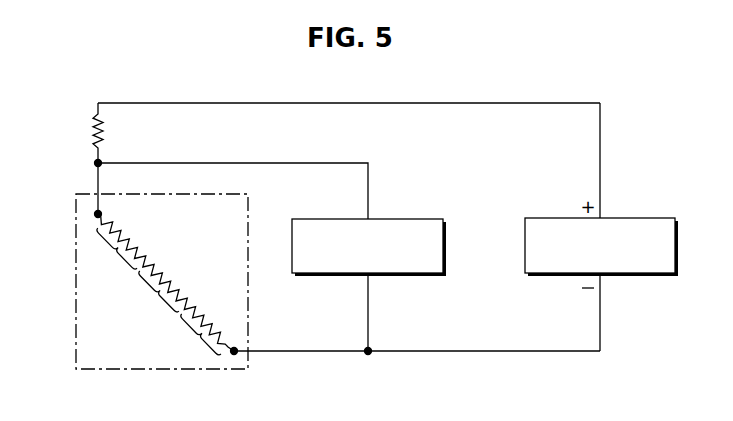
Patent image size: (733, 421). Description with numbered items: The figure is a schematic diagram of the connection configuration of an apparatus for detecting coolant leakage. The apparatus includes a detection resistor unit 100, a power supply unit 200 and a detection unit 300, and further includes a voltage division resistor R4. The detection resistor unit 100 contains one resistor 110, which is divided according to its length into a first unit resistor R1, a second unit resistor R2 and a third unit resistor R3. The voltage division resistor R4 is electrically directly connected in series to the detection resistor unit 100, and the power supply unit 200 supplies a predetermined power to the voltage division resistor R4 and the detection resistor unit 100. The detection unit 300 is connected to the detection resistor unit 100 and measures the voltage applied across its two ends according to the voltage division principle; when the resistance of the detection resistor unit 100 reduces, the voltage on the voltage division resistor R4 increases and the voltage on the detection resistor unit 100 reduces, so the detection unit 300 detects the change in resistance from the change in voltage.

The detection resistor unit 100 is at (76, 239).
The resistor 110 is at (185, 268).
The power supply unit 200 is at (653, 218).
The detection unit 300 is at (421, 219).
The first unit resistor R1 is at (193, 336).
The second unit resistor R2 is at (152, 295).
The third unit resistor R3 is at (111, 253).
The voltage division resistor R4 is at (82, 131).